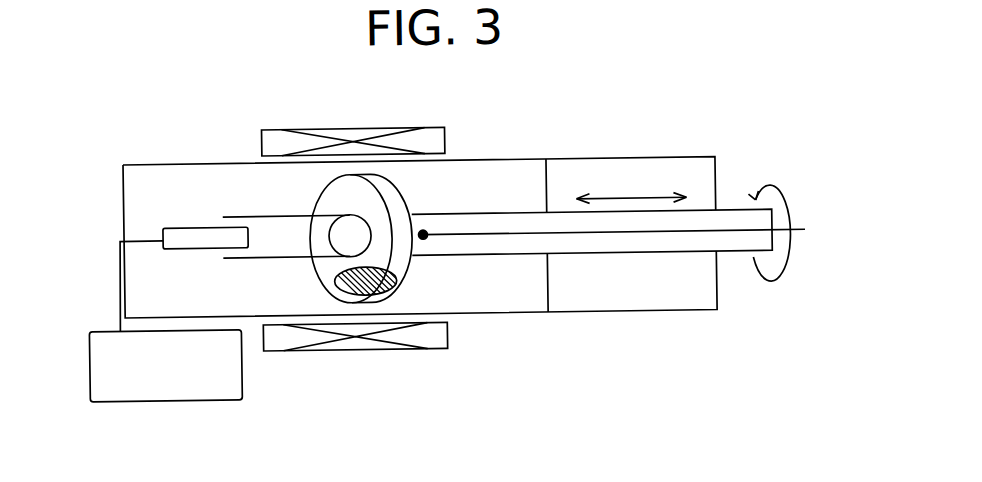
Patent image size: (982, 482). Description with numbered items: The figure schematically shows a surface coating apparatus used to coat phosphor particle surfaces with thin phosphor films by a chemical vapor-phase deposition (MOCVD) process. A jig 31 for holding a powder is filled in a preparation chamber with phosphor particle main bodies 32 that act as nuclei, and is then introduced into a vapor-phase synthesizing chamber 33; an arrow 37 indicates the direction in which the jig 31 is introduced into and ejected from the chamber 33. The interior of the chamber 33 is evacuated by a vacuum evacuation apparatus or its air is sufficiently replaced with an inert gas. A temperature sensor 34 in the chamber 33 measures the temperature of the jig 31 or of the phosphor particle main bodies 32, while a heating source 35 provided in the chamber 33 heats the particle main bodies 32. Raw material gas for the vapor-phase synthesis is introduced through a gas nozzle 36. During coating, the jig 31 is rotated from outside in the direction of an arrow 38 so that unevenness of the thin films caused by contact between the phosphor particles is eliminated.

The jig 31 is at (397, 202).
The phosphor particle main bodies 32 is at (396, 282).
The vapor-phase synthesizing chamber 33 is at (188, 164).
The temperature sensor 34 is at (506, 240).
The heating source 35 is at (300, 132).
The gas nozzle 36 is at (162, 238).
The arrow 37 is at (626, 205).
The arrow 38 is at (786, 262).